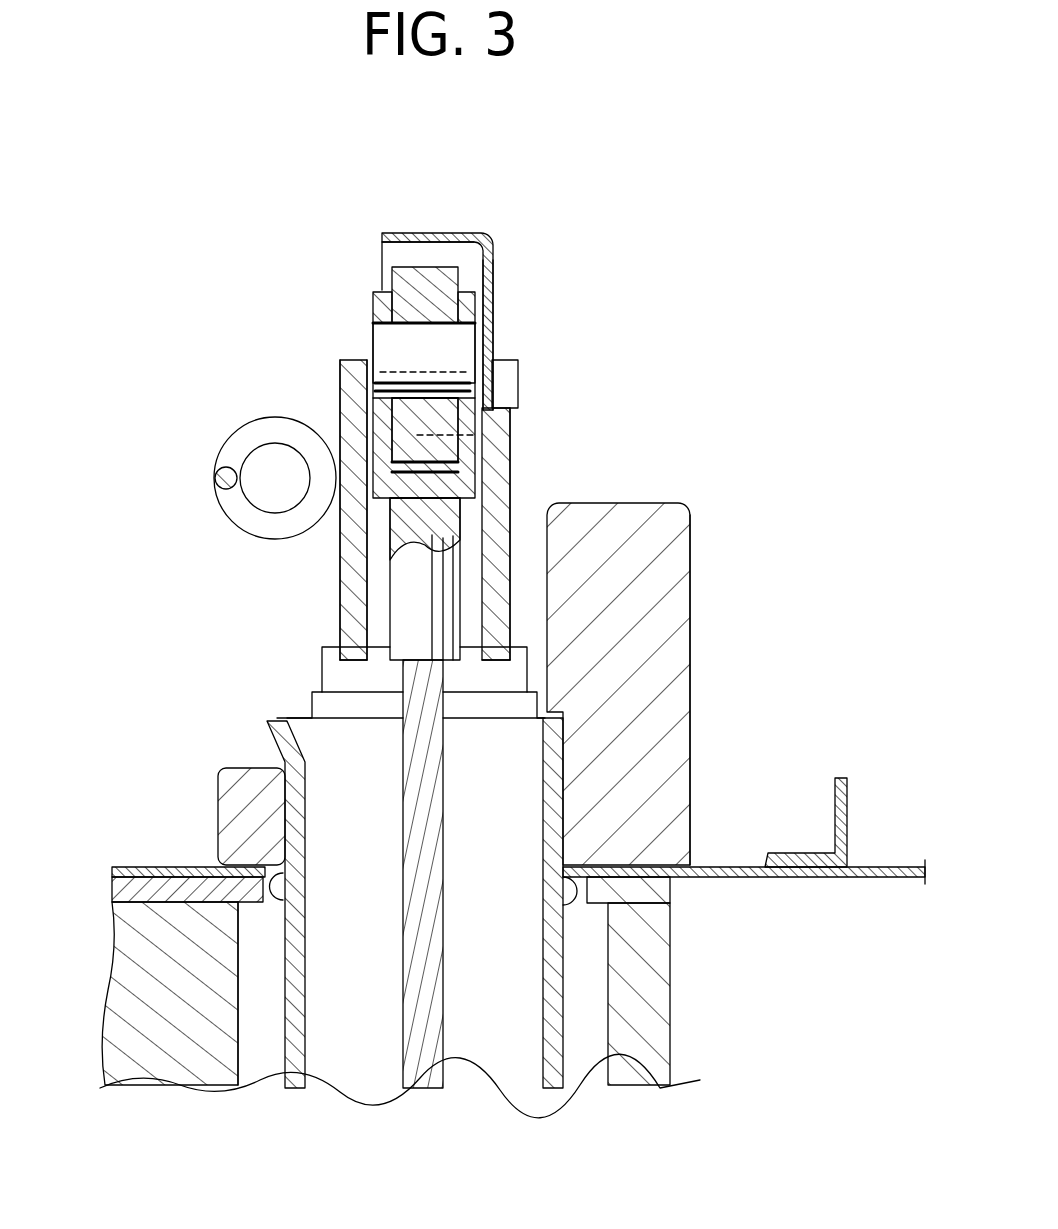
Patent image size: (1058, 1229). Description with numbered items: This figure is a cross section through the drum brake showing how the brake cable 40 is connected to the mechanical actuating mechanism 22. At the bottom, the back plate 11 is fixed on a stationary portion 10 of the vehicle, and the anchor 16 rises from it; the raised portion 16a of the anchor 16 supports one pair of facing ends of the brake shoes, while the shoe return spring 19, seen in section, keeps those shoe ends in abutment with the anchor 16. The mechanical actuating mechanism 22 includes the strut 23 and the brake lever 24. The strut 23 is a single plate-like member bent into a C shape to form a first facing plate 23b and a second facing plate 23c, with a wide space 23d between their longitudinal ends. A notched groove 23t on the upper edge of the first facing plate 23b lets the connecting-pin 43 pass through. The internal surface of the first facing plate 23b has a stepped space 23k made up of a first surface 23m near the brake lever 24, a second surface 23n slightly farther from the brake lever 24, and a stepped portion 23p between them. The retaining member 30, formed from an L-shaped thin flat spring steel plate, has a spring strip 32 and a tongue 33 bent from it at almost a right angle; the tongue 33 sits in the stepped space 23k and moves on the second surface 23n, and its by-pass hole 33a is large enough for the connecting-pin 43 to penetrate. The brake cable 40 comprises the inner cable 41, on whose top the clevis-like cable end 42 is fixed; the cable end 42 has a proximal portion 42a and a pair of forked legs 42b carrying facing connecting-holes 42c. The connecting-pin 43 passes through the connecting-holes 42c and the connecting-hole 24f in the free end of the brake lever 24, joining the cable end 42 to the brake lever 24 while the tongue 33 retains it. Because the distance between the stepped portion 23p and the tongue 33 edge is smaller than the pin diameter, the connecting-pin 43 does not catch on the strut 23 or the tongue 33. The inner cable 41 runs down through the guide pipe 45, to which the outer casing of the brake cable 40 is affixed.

The stationary portion 10 is at (120, 1032).
The back plate 11 is at (112, 870).
The anchor 16 is at (680, 684).
The raised portion 16a is at (695, 770).
The shoe return spring 19 is at (233, 467).
The mechanical actuating mechanism 22 is at (385, 448).
The strut 23 is at (407, 511).
The first facing plate 23b is at (510, 495).
The second facing plate 23c is at (345, 605).
The wide space 23d is at (360, 645).
The stepped space 23k is at (222, 486).
The first surface 23m is at (400, 555).
The second surface 23n is at (430, 440).
The stepped portion 23p is at (470, 445).
The notched groove 23t is at (520, 378).
The brake lever 24 is at (360, 243).
The connecting-hole 24f is at (412, 332).
The retaining member 30 is at (494, 281).
The spring strip 32 is at (452, 235).
The tongue 33 is at (495, 290).
The by-pass hole 33a is at (535, 335).
The brake cable 40 is at (450, 995).
The inner cable 41 is at (402, 970).
The cable end 42 is at (410, 543).
The proximal portion 42a is at (330, 665).
The forked legs 42b is at (380, 430).
The connecting-holes 42c is at (380, 385).
The connecting-pin 43 is at (470, 352).
The guide pipe 45 is at (585, 955).